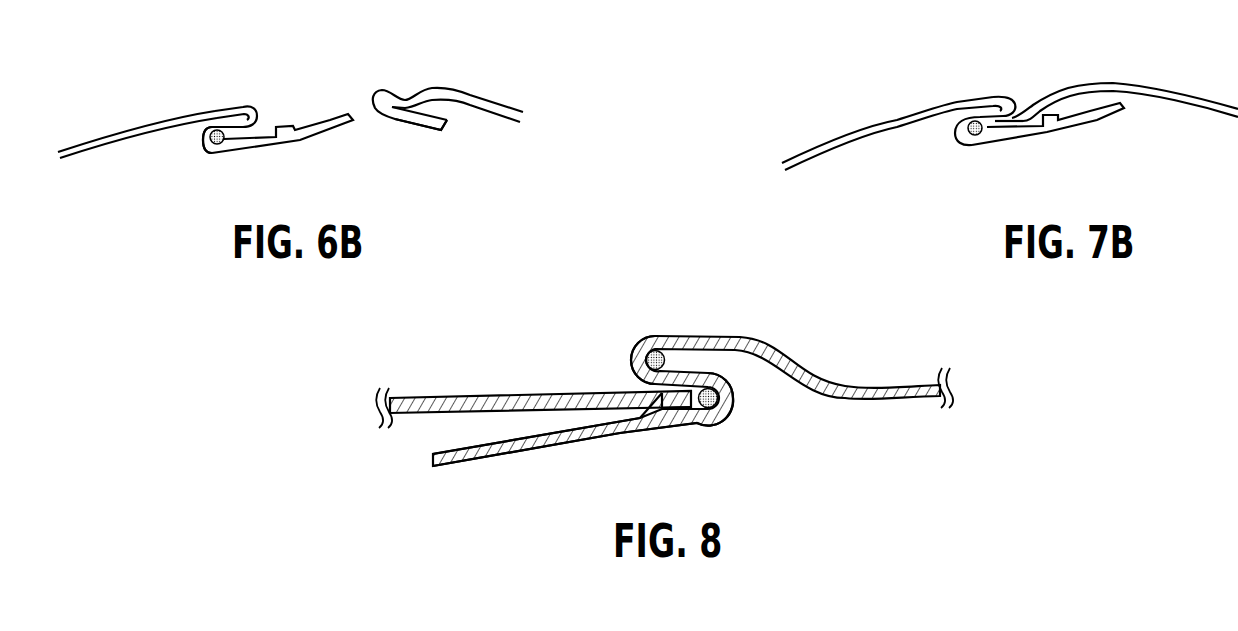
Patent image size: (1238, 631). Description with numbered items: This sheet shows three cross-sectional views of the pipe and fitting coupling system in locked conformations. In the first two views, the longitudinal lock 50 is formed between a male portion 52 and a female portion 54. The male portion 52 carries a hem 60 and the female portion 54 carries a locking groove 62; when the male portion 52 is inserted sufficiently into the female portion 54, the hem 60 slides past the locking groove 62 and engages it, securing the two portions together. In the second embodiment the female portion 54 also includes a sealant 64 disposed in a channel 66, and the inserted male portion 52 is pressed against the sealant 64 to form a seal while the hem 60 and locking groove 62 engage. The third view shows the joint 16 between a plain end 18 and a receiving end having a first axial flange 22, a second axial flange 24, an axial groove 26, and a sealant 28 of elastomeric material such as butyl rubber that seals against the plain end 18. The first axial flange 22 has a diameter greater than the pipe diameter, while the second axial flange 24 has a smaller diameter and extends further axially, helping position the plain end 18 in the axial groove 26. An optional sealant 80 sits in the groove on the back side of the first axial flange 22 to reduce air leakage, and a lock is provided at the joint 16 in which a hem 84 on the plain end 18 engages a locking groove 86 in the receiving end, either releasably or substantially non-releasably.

In FIG. 8, the joint 16 is at (693, 306).
In FIG. 8, the plain end 18 is at (512, 393).
In FIG. 8, the first axial flange 22 is at (631, 358).
In FIG. 8, the second axial flange 24 is at (498, 460).
In FIG. 8, the axial groove 26 is at (735, 398).
In FIG. 8, the sealant 28 is at (718, 412).
In FIG. 6B, the longitudinal lock 50 is at (296, 82).
In FIG. 7B, the longitudinal lock 50 is at (1028, 72).
In FIG. 6B, the male portion 52 is at (411, 70).
In FIG. 6B, the female portion 54 is at (227, 98).
In FIG. 6B, the hem 60 is at (451, 132).
In FIG. 6B, the locking groove 62 is at (268, 147).
In FIG. 7B, the locking groove 62 is at (1044, 127).
In FIG. 6B, the sealant 64 is at (209, 154).
In FIG. 7B, the sealant 64 is at (977, 145).
In FIG. 6B, the channel 66 is at (196, 142).
In FIG. 8, the sealant 80 is at (652, 350).
In FIG. 8, the hem 84 is at (667, 414).
In FIG. 8, the locking groove 86 is at (650, 428).